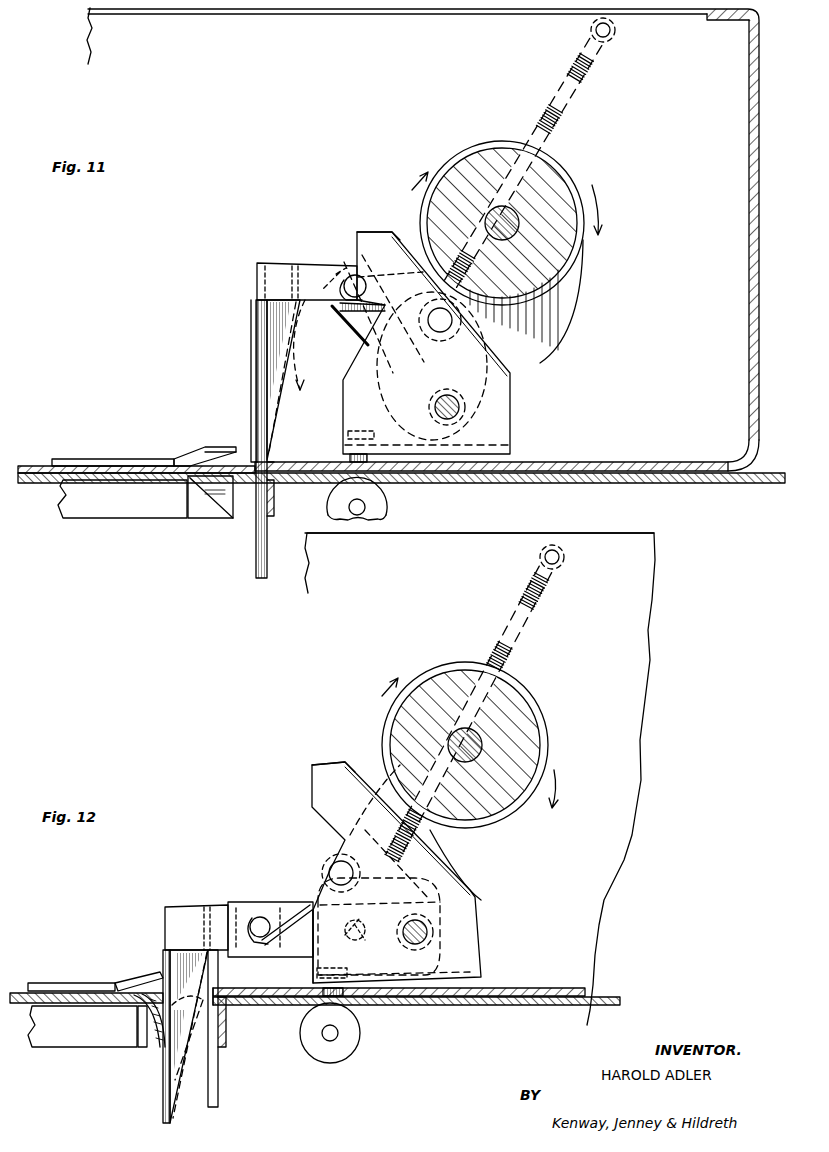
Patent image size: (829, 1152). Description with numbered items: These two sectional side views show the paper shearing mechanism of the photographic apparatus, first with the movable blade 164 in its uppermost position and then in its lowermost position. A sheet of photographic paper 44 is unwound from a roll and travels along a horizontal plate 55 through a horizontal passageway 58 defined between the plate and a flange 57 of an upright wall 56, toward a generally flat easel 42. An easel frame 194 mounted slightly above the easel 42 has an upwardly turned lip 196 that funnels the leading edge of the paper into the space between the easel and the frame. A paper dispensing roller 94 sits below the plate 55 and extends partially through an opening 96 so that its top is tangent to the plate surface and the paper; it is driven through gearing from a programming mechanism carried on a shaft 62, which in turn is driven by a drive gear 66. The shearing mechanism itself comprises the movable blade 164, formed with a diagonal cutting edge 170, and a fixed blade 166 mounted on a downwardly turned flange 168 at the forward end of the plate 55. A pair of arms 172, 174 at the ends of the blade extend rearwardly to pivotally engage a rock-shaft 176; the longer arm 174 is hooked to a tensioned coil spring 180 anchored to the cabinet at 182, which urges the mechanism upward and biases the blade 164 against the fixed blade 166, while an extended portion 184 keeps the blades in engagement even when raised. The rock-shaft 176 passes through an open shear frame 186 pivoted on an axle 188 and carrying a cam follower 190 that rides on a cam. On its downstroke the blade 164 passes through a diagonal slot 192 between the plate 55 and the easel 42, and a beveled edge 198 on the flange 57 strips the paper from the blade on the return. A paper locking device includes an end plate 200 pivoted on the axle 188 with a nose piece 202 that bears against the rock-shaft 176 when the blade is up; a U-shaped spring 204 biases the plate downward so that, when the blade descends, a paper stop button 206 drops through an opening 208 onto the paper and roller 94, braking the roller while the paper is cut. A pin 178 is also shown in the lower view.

In FIG. 11, the easel 42 is at (88, 487).
In FIG. 12, the easel 42 is at (87, 1026).
In FIG. 11, the photographic paper 44 is at (28, 470).
In FIG. 12, the photographic paper 44 is at (25, 993).
In FIG. 11, the horizontal plate 55 is at (703, 484).
In FIG. 12, the horizontal plate 55 is at (542, 1006).
In FIG. 11, the wall 56 is at (749, 325).
In FIG. 11, the flange 57 is at (645, 462).
In FIG. 12, the flange 57 is at (548, 988).
In FIG. 11, the horizontal passageway 58 is at (753, 466).
In FIG. 11, the shaft 62 is at (517, 230).
In FIG. 12, the shaft 62 is at (482, 747).
In FIG. 11, the drive gear 66 is at (548, 340).
In FIG. 12, the drive gear 66 is at (549, 745).
In FIG. 11, the paper dispensing roller 94 is at (387, 508).
In FIG. 12, the paper dispensing roller 94 is at (361, 1043).
In FIG. 12, the opening 96 is at (306, 1000).
In FIG. 11, the movable blade 164 is at (256, 340).
In FIG. 12, the movable blade 164 is at (163, 1103).
In FIG. 11, the fixed blade 166 is at (256, 565).
In FIG. 12, the fixed blade 166 is at (218, 1090).
In FIG. 11, the downwardly turned flange 168 is at (275, 506).
In FIG. 12, the downwardly turned flange 168 is at (227, 1040).
In FIG. 11, the diagonal cutting edge 170 is at (278, 410).
In FIG. 12, the diagonal cutting edge 170 is at (178, 1110).
In FIG. 11, the arm 172 is at (312, 264).
In FIG. 12, the arm 172 is at (220, 905).
In FIG. 11, the arm 174 is at (402, 271).
In FIG. 12, the arm 174 is at (286, 901).
In FIG. 11, the rock-shaft 176 is at (348, 277).
In FIG. 12, the rock-shaft 176 is at (258, 916).
In FIG. 12, the pin 178 is at (366, 940).
In FIG. 11, the tensioned coil spring 180 is at (580, 78).
In FIG. 12, the tensioned coil spring 180 is at (540, 600).
In FIG. 11, the spring anchor 182 is at (616, 31).
In FIG. 12, the spring anchor 182 is at (564, 559).
In FIG. 11, the extended portion 184 is at (251, 462).
In FIG. 11, the open shear frame 186 is at (356, 330).
In FIG. 12, the open shear frame 186 is at (300, 900).
In FIG. 11, the axle 188 is at (447, 393).
In FIG. 12, the axle 188 is at (402, 925).
In FIG. 11, the cam follower 190 is at (434, 309).
In FIG. 12, the cam follower 190 is at (330, 862).
In FIG. 11, the diagonal slot 192 is at (244, 505).
In FIG. 12, the diagonal slot 192 is at (150, 1052).
In FIG. 11, the easel frame 194 is at (120, 458).
In FIG. 12, the easel frame 194 is at (86, 983).
In FIG. 11, the upwardly turned lip 196 is at (205, 453).
In FIG. 12, the upwardly turned lip 196 is at (147, 977).
In FIG. 11, the beveled edge 198 is at (271, 462).
In FIG. 11, the end plate 200 is at (511, 430).
In FIG. 12, the end plate 200 is at (468, 890).
In FIG. 11, the nose piece 202 is at (372, 230).
In FIG. 12, the nose piece 202 is at (311, 785).
In FIG. 11, the U-shaped spring 204 is at (487, 400).
In FIG. 12, the U-shaped spring 204 is at (414, 887).
In FIG. 11, the paper stop button 206 is at (346, 448).
In FIG. 12, the paper stop button 206 is at (317, 970).
In FIG. 11, the opening 208 is at (346, 457).
In FIG. 12, the opening 208 is at (320, 991).